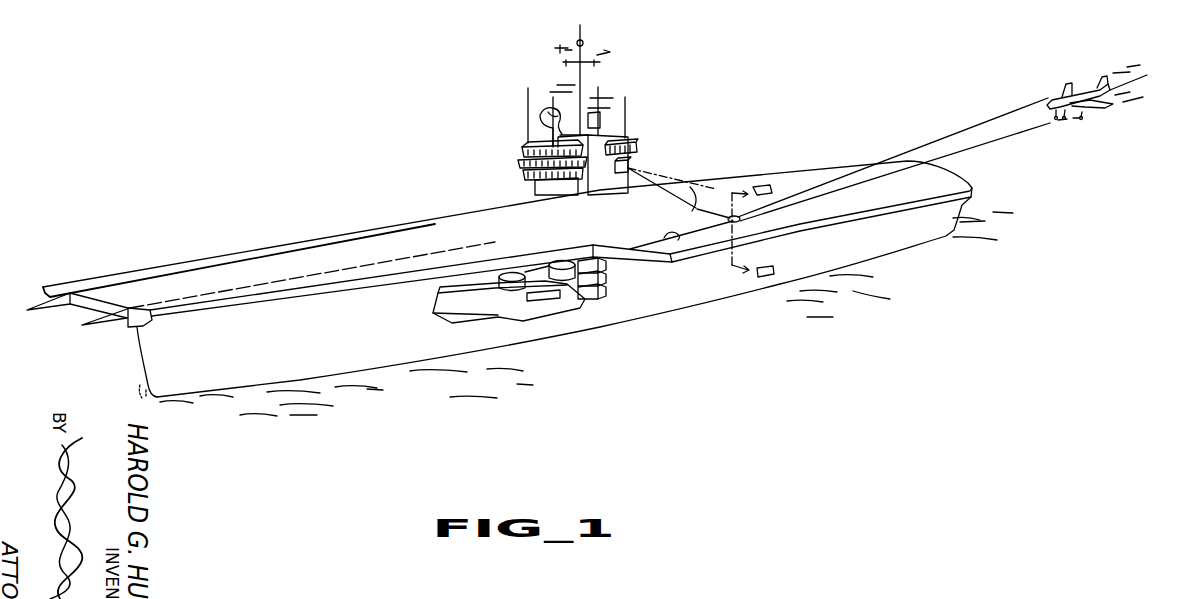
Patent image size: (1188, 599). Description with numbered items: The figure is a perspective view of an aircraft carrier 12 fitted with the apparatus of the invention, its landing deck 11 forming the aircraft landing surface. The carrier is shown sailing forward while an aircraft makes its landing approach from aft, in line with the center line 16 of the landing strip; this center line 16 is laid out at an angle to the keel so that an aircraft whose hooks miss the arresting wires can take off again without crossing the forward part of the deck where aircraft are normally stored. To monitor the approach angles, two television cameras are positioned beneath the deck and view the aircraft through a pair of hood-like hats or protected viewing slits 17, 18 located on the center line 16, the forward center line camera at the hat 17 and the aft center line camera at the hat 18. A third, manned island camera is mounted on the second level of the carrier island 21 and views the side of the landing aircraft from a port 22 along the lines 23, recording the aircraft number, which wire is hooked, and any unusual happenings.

The landing deck 11 is at (474, 213).
The aircraft carrier 12 is at (355, 179).
The center line 16 is at (852, 184).
The forward hat or protected viewing slit 17 is at (667, 236).
The aft hat or protected viewing slit 18 is at (729, 218).
The carrier island 21 is at (607, 136).
The port 22 is at (628, 167).
The lines indicating island camera view 23 is at (690, 207).